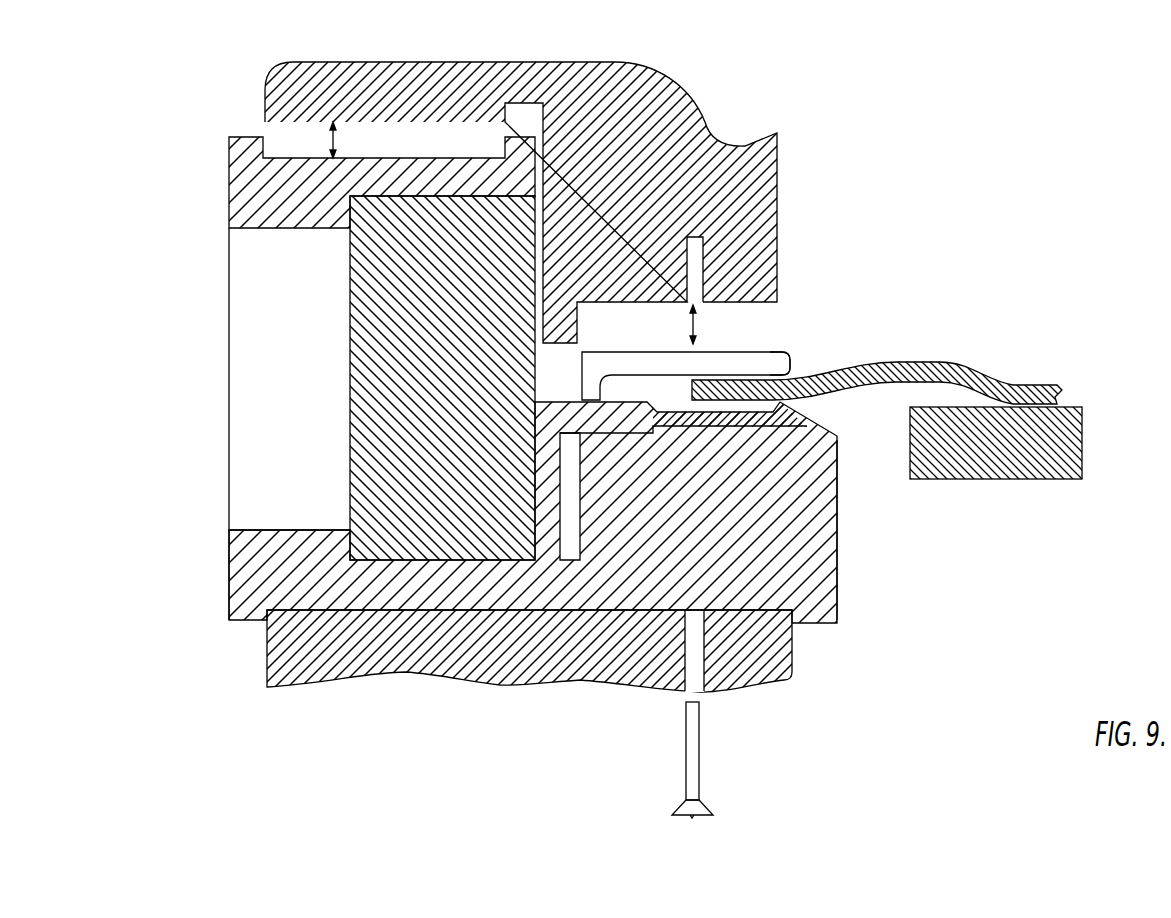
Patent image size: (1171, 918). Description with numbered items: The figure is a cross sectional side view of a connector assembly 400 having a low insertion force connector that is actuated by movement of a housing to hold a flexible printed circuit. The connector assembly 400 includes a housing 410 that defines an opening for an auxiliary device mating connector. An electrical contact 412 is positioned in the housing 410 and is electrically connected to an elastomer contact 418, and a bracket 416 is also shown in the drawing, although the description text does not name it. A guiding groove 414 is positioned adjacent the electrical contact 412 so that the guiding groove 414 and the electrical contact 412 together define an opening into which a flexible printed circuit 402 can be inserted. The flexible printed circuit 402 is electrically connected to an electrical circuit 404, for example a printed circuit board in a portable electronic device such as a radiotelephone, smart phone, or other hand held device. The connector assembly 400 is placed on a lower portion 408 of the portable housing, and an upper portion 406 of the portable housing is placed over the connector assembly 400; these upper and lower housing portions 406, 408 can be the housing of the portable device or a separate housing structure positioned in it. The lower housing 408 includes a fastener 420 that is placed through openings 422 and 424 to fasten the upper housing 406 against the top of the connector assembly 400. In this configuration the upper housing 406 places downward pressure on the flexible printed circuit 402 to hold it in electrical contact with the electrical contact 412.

The connector assembly 400 is at (860, 468).
The flexible printed circuit 402 is at (1003, 380).
The electrical circuit 404 is at (1082, 455).
The upper portion of the portable housing 406 is at (571, 62).
The lower portion of the portable housing 408 is at (793, 650).
The housing 410 is at (837, 569).
The electrical contact 412 is at (665, 410).
The guiding groove 414 is at (783, 358).
The bracket 416 is at (215, 233).
The elastomer contact 418 is at (350, 458).
The fastener 420 is at (700, 752).
The opening 422 is at (700, 673).
The opening 424 is at (697, 272).